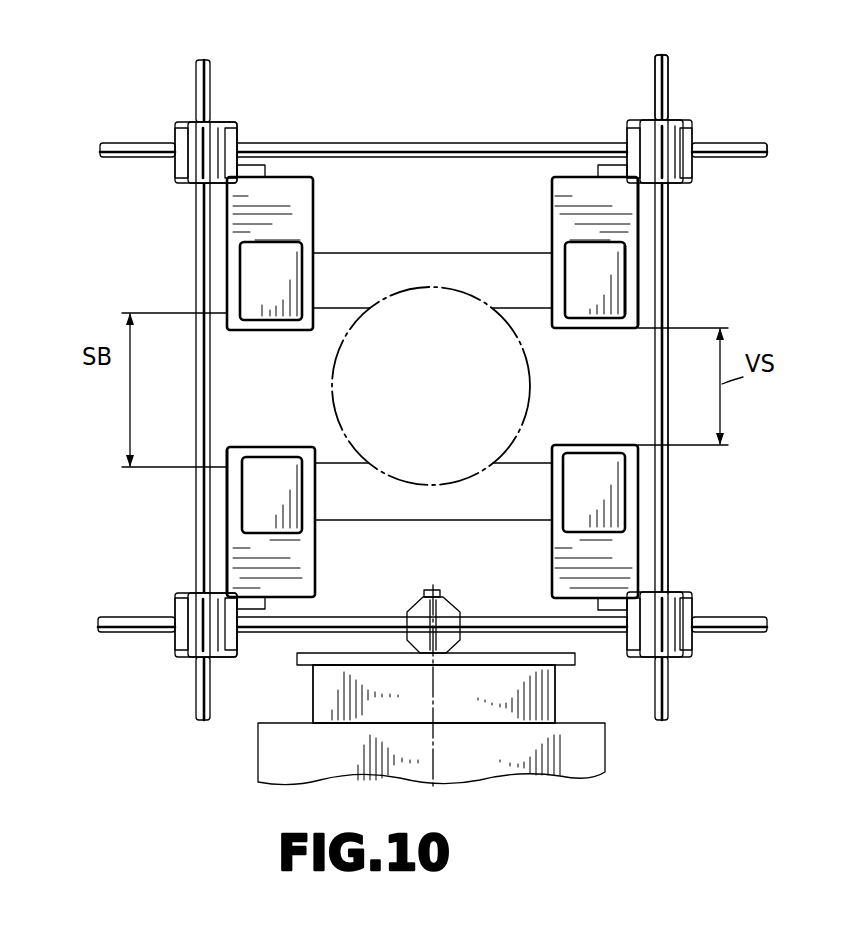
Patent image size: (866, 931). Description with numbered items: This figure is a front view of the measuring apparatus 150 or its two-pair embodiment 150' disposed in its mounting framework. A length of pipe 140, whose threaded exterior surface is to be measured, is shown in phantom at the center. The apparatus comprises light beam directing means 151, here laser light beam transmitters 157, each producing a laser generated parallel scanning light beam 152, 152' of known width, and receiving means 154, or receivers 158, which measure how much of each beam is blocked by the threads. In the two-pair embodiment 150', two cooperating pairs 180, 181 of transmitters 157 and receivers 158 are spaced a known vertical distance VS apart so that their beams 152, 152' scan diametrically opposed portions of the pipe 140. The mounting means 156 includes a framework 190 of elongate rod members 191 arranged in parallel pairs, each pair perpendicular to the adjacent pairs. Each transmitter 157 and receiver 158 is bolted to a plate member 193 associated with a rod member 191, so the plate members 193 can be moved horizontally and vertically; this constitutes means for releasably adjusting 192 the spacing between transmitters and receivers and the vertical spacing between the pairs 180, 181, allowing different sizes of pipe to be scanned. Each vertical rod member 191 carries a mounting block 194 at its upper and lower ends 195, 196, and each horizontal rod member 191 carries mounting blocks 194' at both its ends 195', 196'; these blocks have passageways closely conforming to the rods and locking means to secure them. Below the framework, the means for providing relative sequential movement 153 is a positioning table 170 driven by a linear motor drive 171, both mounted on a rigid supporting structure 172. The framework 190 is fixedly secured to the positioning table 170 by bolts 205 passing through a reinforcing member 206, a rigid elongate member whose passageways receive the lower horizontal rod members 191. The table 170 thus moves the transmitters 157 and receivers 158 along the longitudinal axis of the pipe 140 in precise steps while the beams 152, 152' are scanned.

The length of pipe 140 is at (336, 366).
The apparatus for measuring dimensional variables 150 is at (735, 388).
The apparatus (two-pair embodiment) 150' is at (776, 386).
The light beam directing means 151 is at (608, 328).
The scanning light beam 152 is at (432, 257).
The second scanning light beam 152' is at (433, 513).
The means for providing relative sequential movement 153 is at (300, 695).
The receiving means 154 is at (264, 322).
The mounting means 156 is at (684, 90).
The laser light beam transmitter 157 is at (641, 300).
The receiver 158 is at (240, 212).
The positioning table 170 is at (574, 665).
The linear motor drive 171 is at (556, 700).
The supporting structure 172 is at (608, 758).
The first pair of transmitter and receiver 180 is at (632, 265).
The second pair of transmitter and receiver 181 is at (632, 490).
The framework 190 is at (748, 132).
The elongate rod member 191 is at (419, 145).
The means for releasably adjusting 192 is at (230, 106).
The plate member 193 is at (296, 177).
The mounting block 194 is at (447, 389).
The mounting block (horizontal rods) 194' is at (435, 360).
The upper end of vertical rod member 195 is at (472, 65).
The end of horizontal rod member 195' is at (108, 166).
The lower end of vertical rod member 196 is at (441, 736).
The other end of horizontal rod member 196' is at (810, 134).
The bolt 205 is at (453, 703).
The reinforcing member 206 is at (440, 595).